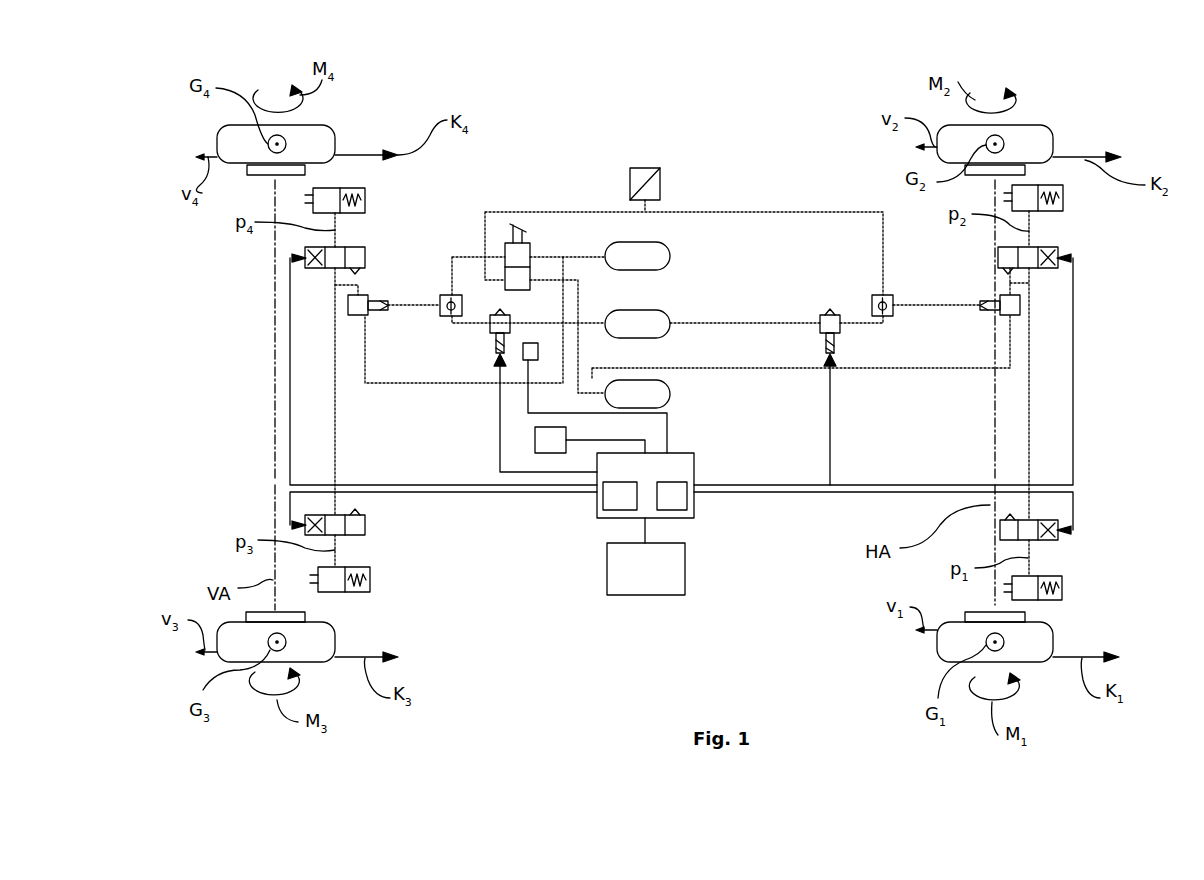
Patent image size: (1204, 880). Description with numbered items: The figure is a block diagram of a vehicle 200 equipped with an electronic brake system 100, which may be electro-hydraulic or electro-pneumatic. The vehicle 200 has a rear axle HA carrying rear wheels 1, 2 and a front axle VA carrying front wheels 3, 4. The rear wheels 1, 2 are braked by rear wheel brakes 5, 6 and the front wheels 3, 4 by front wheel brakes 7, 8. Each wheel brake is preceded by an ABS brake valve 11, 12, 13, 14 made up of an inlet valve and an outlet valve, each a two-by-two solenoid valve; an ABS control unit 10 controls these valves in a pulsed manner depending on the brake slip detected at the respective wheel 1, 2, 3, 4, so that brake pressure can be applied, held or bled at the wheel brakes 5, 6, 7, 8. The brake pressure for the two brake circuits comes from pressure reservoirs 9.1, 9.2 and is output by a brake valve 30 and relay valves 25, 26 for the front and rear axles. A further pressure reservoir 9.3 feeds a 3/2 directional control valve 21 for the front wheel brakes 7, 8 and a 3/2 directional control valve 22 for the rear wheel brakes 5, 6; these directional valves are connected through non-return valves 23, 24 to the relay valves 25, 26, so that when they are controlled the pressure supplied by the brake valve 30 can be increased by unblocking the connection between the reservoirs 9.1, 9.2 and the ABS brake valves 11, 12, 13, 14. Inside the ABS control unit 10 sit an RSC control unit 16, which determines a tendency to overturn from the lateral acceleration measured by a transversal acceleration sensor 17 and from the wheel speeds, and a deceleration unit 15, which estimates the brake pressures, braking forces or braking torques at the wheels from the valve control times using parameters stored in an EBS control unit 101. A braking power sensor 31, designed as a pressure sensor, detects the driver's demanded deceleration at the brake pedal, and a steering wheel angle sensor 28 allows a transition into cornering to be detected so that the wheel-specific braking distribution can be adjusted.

The rear wheel 1 is at (937, 640).
The rear wheel 2 is at (1053, 145).
The front wheel 3 is at (335, 642).
The front wheel 4 is at (335, 145).
The rear wheel brake 5 is at (1062, 588).
The rear wheel brake 6 is at (1063, 200).
The front wheel brake 7 is at (370, 580).
The front wheel brake 8 is at (365, 200).
The pressure reservoir 9.1 is at (670, 257).
The pressure reservoir 9.2 is at (670, 393).
The further pressure reservoir 9.3 is at (670, 318).
The ABS control unit 10 is at (694, 508).
The ABS brake valve 11 is at (1050, 540).
The ABS brake valve 12 is at (1045, 268).
The ABS brake valve 13 is at (365, 525).
The ABS brake valve 14 is at (365, 258).
The deceleration unit 15 is at (644, 507).
The RSC control unit 16 is at (603, 497).
The transversal acceleration sensor 17 is at (550, 453).
The 3/2 directional control valve 21 is at (490, 336).
The 3/2 directional control valve 22 is at (850, 325).
The non-return valve 23 is at (452, 316).
The non-return valve 24 is at (888, 316).
The relay valve 25 is at (348, 305).
The relay valve 26 is at (1020, 305).
The steering wheel angle sensor 28 is at (537, 345).
The brake valve 30 is at (530, 245).
The braking power sensor 31 is at (645, 168).
The electronic brake system 100 is at (526, 625).
The EBS control unit 101 is at (645, 595).
The vehicle 200 is at (1064, 108).